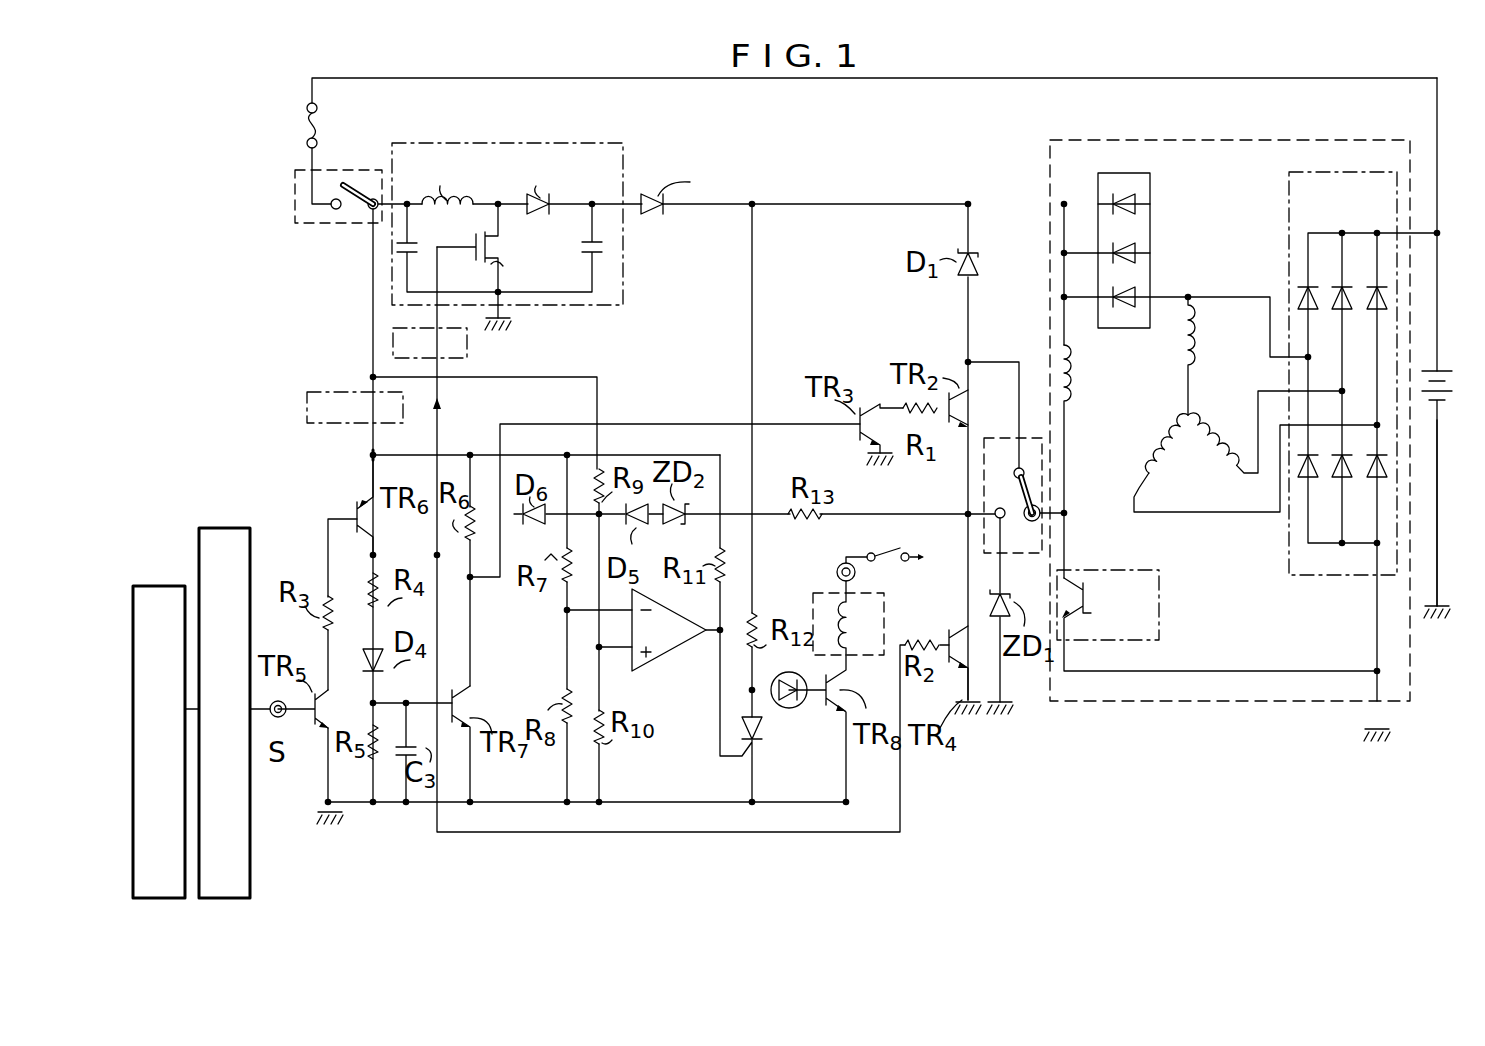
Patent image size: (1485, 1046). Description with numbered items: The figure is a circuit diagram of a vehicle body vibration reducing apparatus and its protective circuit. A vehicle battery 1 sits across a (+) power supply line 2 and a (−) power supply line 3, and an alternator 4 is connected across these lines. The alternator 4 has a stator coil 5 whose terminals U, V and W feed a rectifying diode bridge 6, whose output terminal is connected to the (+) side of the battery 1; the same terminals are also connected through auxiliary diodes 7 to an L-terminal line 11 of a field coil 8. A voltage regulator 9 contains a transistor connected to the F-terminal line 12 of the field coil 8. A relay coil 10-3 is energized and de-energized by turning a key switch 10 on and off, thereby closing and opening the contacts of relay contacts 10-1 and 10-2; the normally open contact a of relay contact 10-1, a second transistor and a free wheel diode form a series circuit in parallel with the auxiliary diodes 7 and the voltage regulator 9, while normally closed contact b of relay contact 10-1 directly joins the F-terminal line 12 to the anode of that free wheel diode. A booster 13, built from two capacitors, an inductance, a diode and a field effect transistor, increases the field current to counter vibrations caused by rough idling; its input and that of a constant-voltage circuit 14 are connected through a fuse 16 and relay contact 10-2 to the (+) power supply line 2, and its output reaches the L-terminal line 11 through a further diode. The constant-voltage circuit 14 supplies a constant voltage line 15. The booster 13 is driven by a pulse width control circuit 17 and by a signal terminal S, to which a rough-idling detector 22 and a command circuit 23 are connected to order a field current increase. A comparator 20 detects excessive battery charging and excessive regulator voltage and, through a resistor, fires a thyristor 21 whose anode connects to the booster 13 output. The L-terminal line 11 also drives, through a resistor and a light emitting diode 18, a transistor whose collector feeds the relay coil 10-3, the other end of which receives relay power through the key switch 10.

The vehicle battery 1 is at (1452, 372).
The (+) power supply line 2 is at (1437, 262).
The (−) power supply line 3 is at (1437, 478).
The alternator 4 is at (1200, 701).
The stator coil 5 is at (1186, 415).
The rectifying diode bridge 6 is at (1288, 183).
The auxiliary diodes 7 is at (1150, 178).
The field coil 8 is at (1076, 380).
The voltage regulator 9 is at (1159, 583).
The key switch 10 is at (889, 542).
The relay contact 10-1 is at (1006, 438).
The relay contact 10-2 is at (335, 223).
The relay coil 10-3 is at (884, 613).
The L-terminal line 11 is at (1058, 327).
The F-terminal line 12 is at (1068, 517).
The booster 13 is at (623, 150).
The constant-voltage circuit 14 is at (302, 408).
The constant voltage line 15 is at (366, 467).
The fuse 16 is at (304, 108).
The pulse width control circuit 17 is at (467, 350).
The light emitting diode 18 is at (800, 705).
The comparator 20 is at (680, 676).
The thyristor 21 is at (765, 740).
The rough-idling detector 22 is at (157, 586).
The field coil current increase command circuit 23 is at (225, 528).